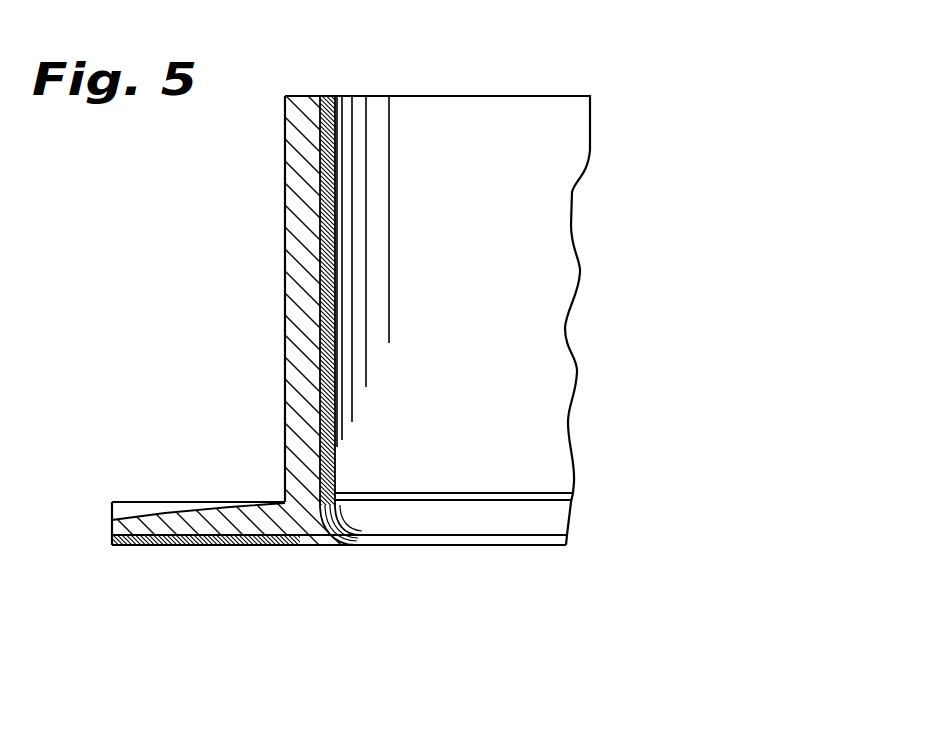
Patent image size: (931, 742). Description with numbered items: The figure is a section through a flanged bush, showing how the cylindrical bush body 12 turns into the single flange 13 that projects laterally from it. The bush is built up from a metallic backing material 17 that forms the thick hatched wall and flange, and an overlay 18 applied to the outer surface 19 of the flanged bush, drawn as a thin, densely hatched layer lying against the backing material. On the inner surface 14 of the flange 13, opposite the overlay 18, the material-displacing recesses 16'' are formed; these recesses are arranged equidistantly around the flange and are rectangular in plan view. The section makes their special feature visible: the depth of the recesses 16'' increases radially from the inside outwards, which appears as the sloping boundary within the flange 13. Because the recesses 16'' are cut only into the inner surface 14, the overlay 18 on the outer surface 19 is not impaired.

The cylindrical bush body 12 is at (466, 133).
The flange 13 is at (112, 532).
The inner surface of the flange 14 is at (242, 491).
The material-displacing recesses 16'' is at (195, 469).
The metallic backing material 17 is at (296, 216).
The overlay 18 is at (335, 449).
The outer surface 19 is at (153, 553).